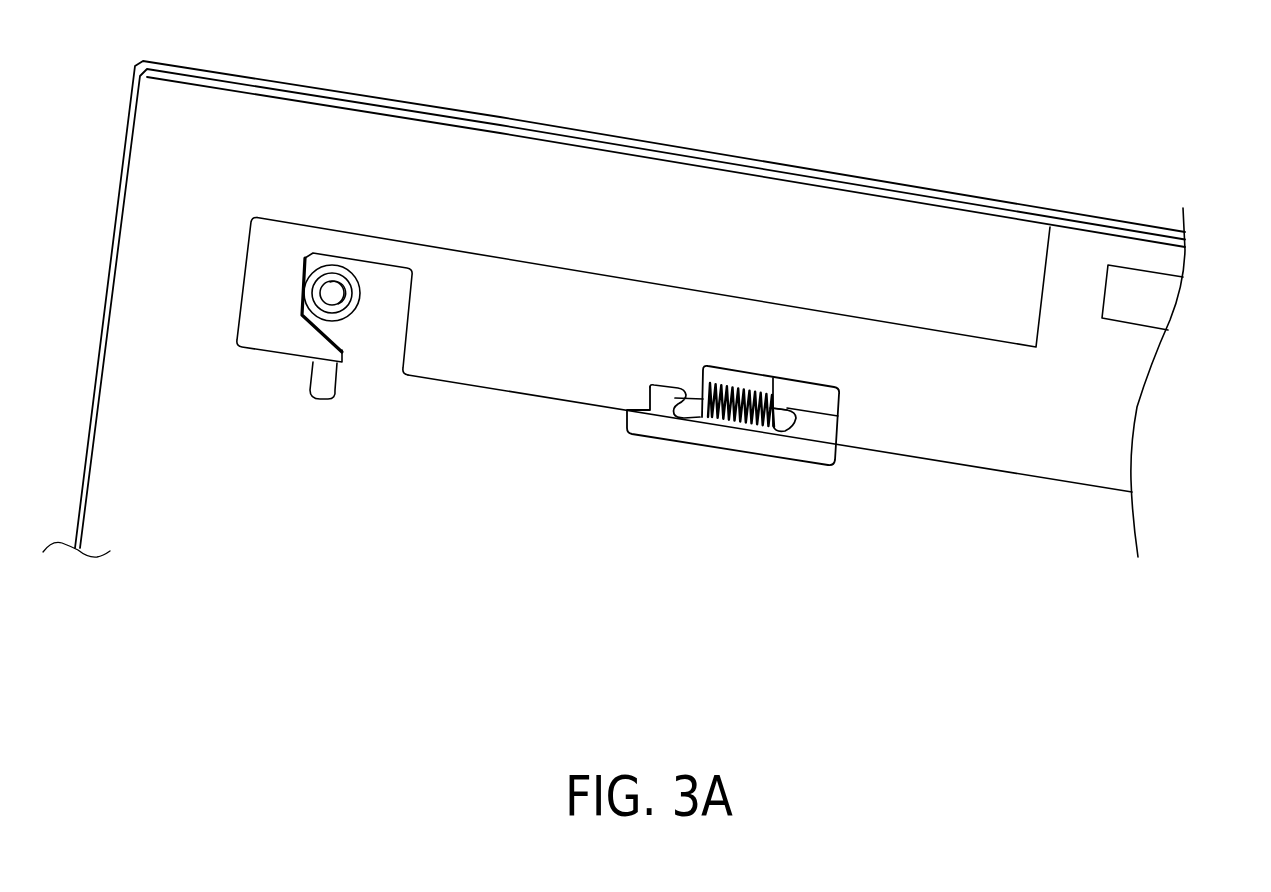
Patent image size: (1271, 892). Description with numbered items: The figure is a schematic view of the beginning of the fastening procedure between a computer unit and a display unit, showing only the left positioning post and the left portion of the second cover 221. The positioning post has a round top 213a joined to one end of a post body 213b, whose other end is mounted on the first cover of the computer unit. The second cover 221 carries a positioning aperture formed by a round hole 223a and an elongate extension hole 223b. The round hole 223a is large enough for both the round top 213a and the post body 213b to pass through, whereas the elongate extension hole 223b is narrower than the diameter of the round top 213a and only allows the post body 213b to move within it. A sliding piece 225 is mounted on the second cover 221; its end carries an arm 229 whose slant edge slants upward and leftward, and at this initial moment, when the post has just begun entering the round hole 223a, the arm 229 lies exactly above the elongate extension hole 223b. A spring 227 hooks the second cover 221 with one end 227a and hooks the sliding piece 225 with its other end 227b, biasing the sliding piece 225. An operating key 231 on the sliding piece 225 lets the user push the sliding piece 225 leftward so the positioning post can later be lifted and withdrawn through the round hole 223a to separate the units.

The round top 213a is at (350, 280).
The post body 213b is at (330, 292).
The second cover 221 is at (817, 398).
The round hole 223a is at (358, 312).
The elongate extension hole 223b is at (325, 380).
The sliding piece 225 is at (923, 433).
The spring 227 is at (733, 420).
The first spring hook 227a is at (783, 420).
The another end of the spring 227b is at (672, 420).
The arm 229 is at (308, 343).
The operating key 231 is at (1132, 287).